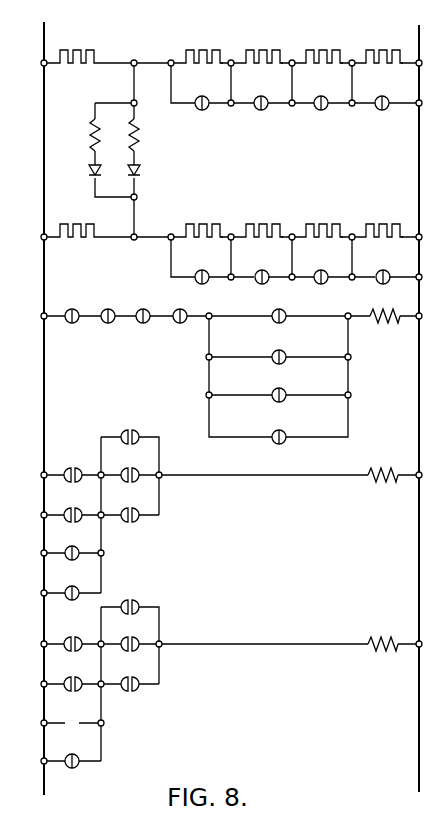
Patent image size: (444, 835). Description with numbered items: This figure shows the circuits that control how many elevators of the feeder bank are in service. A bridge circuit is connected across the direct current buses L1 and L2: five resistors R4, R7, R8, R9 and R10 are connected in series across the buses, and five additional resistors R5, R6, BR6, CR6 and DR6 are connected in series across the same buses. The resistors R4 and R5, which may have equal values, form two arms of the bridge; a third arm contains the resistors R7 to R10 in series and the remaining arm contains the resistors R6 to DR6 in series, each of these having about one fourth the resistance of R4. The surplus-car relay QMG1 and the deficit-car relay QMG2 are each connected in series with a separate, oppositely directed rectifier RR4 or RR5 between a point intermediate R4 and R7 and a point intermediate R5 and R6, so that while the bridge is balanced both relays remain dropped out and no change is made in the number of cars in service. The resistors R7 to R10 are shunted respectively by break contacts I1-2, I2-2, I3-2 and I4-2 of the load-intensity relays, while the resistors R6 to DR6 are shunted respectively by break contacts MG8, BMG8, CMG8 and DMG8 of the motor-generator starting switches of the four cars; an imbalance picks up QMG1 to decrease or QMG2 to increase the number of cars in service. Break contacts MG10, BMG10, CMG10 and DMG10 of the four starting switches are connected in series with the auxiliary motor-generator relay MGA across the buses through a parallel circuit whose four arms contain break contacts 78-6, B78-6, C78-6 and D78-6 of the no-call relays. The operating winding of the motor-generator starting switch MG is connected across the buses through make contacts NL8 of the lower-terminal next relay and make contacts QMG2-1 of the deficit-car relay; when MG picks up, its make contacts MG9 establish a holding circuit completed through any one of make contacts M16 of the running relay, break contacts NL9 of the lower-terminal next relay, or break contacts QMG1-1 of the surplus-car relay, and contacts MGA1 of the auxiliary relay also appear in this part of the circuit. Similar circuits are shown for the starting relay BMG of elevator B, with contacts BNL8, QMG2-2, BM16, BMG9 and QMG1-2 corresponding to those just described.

The direct current bus L1 is at (47, 44).
The direct current bus L2 is at (416, 44).
The resistor R4 is at (77, 58).
The resistor R5 is at (75, 226).
The resistor R6 is at (184, 227).
The resistor BR6 is at (232, 227).
The resistor CR6 is at (292, 227).
The resistor DR6 is at (354, 227).
The resistor R7 is at (218, 52).
The resistor R8 is at (280, 52).
The resistor R9 is at (332, 52).
The resistor R10 is at (386, 52).
The surplus-car relay QMG1 is at (89, 121).
The deficit-car relay QMG2 is at (140, 148).
The rectifier RR4 is at (89, 171).
The rectifier RR5 is at (142, 173).
The load-intensity relay break contacts I1-2 is at (205, 112).
The load-intensity relay break contacts I2-2 is at (267, 112).
The load-intensity relay break contacts I3-2 is at (327, 112).
The load-intensity relay break contacts I4-2 is at (396, 125).
The motor-generator starting switch break contacts MG8 is at (197, 271).
The motor-generator starting switch break contacts BMG8 is at (264, 264).
The motor-generator starting switch break contacts CMG8 is at (322, 264).
The motor-generator starting switch break contacts DMG8 is at (386, 264).
The motor-generator starting switch break contacts MG10 is at (75, 302).
The motor-generator starting switch break contacts BMG10 is at (112, 324).
The motor-generator starting switch break contacts CMG10 is at (139, 309).
The motor-generator starting switch break contacts DMG10 is at (183, 324).
The no-call relay break contacts 78-6 is at (273, 311).
The no-call relay break contacts B78-6 is at (272, 352).
The no-call relay break contacts C78-6 is at (272, 390).
The no-call relay break contacts D78-6 is at (272, 432).
The auxiliary motor-generator relay MGA is at (399, 300).
The contact θ MGA1 is at (138, 420).
The lower-terminal next relay make contacts NL8 is at (80, 459).
The deficit-car relay make contacts QMG2-1 is at (134, 483).
The running relay make contacts M16 is at (82, 534).
The motor-generator starting switch make contacts MG9 is at (136, 523).
The lower-terminal next relay break contacts NL9 is at (86, 574).
The surplus-car relay break contacts QMG1-1 is at (79, 599).
The motor-generator starting switch MG is at (392, 468).
The contact BNL8 is at (64, 641).
The contact θ QMG2-2 is at (142, 652).
The contact BM16 is at (85, 705).
The contact BMG9 is at (137, 692).
The contact θ QMG1-2 is at (78, 767).
The motor-generator starting relay BMG is at (396, 637).